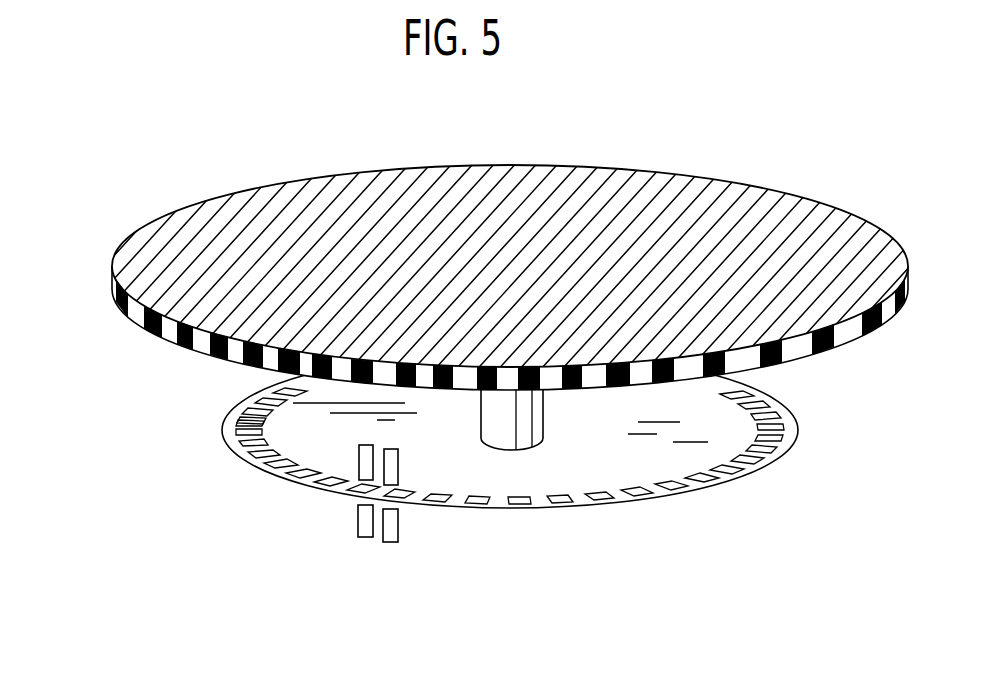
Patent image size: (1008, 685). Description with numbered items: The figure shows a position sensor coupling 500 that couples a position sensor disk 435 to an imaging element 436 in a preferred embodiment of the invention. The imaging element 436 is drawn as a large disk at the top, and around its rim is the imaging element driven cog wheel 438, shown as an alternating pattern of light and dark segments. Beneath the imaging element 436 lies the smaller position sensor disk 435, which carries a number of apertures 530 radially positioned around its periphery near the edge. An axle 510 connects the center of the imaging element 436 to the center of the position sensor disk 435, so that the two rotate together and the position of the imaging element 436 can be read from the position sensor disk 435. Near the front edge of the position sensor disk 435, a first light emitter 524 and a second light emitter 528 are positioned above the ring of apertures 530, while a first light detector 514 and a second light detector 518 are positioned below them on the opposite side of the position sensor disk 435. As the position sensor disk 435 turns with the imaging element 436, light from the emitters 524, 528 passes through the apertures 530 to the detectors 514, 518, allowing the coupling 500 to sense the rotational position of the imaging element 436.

The position sensor coupling 500 is at (133, 490).
The imaging element 436 is at (102, 195).
The imaging element driven cog wheel 438 is at (172, 341).
The position sensor disk 435 is at (771, 468).
The apertures 530 is at (690, 482).
The axle 510 is at (543, 422).
The first light emitter 524 is at (361, 468).
The second light emitter 528 is at (396, 470).
The first light detector 514 is at (362, 531).
The second light detector 518 is at (396, 533).